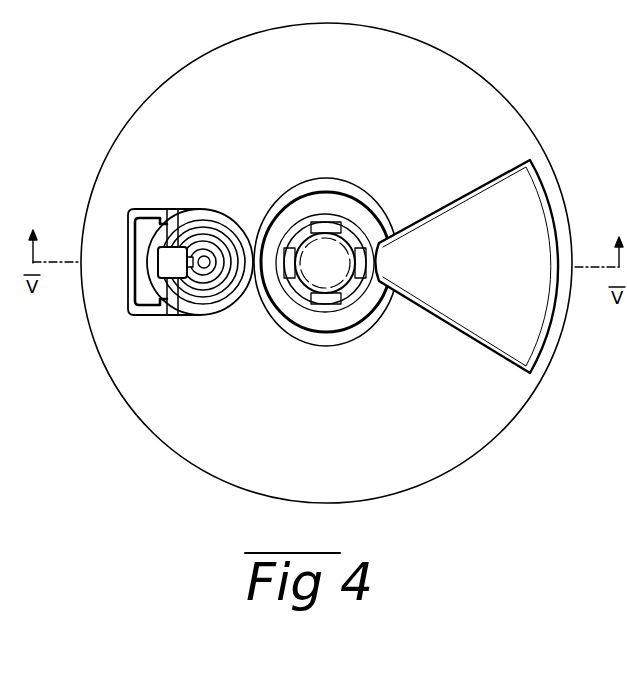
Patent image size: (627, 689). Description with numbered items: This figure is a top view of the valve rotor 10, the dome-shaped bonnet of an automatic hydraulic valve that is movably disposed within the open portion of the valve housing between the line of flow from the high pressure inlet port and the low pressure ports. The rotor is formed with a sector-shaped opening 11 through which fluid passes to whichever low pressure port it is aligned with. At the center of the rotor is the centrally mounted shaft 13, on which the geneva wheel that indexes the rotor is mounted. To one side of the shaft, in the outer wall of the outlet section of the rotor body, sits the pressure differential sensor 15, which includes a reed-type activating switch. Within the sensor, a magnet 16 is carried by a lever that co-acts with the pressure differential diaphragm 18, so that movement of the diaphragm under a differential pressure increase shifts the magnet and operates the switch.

The valve rotor 10 is at (463, 88).
The opening 11 is at (535, 312).
The centrally mounted shaft 13 is at (350, 225).
The pressure differential sensor 15 is at (337, 288).
The magnet 16 is at (168, 258).
The pressure differential diaphragm 18 is at (212, 238).